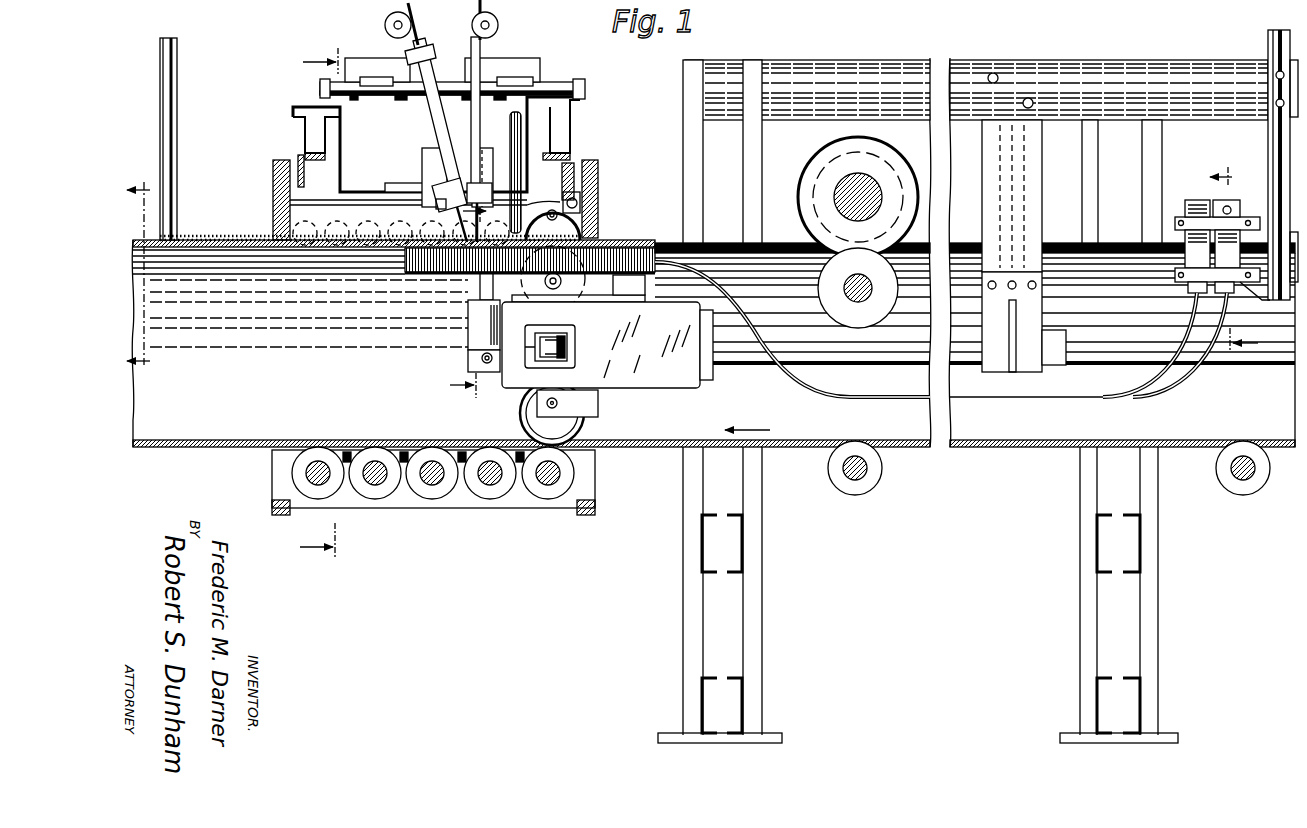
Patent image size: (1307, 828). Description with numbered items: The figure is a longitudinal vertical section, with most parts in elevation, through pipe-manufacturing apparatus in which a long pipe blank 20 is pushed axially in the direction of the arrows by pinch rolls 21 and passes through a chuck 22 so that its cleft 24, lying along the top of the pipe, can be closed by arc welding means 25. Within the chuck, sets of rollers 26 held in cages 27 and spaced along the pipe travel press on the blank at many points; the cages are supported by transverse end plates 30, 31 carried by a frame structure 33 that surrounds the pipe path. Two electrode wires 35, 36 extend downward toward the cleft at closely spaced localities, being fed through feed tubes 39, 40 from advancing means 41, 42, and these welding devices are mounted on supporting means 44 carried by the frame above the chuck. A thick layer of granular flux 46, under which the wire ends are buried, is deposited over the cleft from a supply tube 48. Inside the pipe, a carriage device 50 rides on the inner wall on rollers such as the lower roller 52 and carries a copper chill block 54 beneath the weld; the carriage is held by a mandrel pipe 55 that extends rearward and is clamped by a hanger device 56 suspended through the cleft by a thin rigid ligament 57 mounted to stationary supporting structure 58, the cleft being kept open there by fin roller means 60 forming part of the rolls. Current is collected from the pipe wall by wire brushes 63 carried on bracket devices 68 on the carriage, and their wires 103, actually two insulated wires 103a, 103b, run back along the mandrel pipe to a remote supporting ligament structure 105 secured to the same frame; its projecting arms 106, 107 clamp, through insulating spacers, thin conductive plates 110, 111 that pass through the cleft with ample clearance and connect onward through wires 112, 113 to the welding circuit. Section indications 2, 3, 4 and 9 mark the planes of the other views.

The section line 2- 2 is at (325, 297).
The section line 3- 3 is at (476, 302).
The section line 4- 4 is at (1233, 264).
The section line 9- 9 is at (138, 272).
The pipe blank 20 is at (236, 440).
The pinch rolls 21 is at (918, 237).
The chuck 22 is at (292, 153).
The cleft 24 is at (236, 252).
The arc welding means 25 is at (460, 160).
The rollers 26 is at (542, 502).
The cages 27 is at (592, 488).
The transverse end plate 30 is at (273, 177).
The transverse end plate 31 is at (598, 184).
The frame structure 33 is at (304, 175).
The electrode wire 35 is at (478, 13).
The electrode wire 36 is at (432, 292).
The feed tube 39 is at (476, 108).
The feed tube 40 is at (432, 123).
The advancing means 41 is at (499, 23).
The advancing means 42 is at (386, 23).
The supporting means 44 is at (338, 148).
The granular flux 46 is at (246, 238).
The supply tube 48 is at (510, 135).
The carriage device 50 is at (590, 344).
The lower roller 52 is at (585, 432).
The copper chill block 54 is at (577, 346).
The mandrel pipe 55 is at (873, 360).
The hanger device 56 is at (1040, 307).
The ligament 57 is at (1030, 190).
The stationary supporting structure 58 is at (1173, 122).
The fin roller means 60 is at (910, 167).
The wire brushes 63 is at (404, 263).
The bracket devices 68 is at (541, 292).
The wires 103 is at (718, 293).
The wire 103a is at (1188, 373).
The wire 103b is at (1178, 346).
The supporting ligament structure 105 is at (1283, 165).
The projecting arms 106 is at (1252, 217).
The projecting arms 107 is at (1255, 300).
The conductive plate 110 is at (1214, 249).
The conductive plate 111 is at (1185, 262).
The wire 112 is at (1230, 205).
The wire 113 is at (1195, 200).